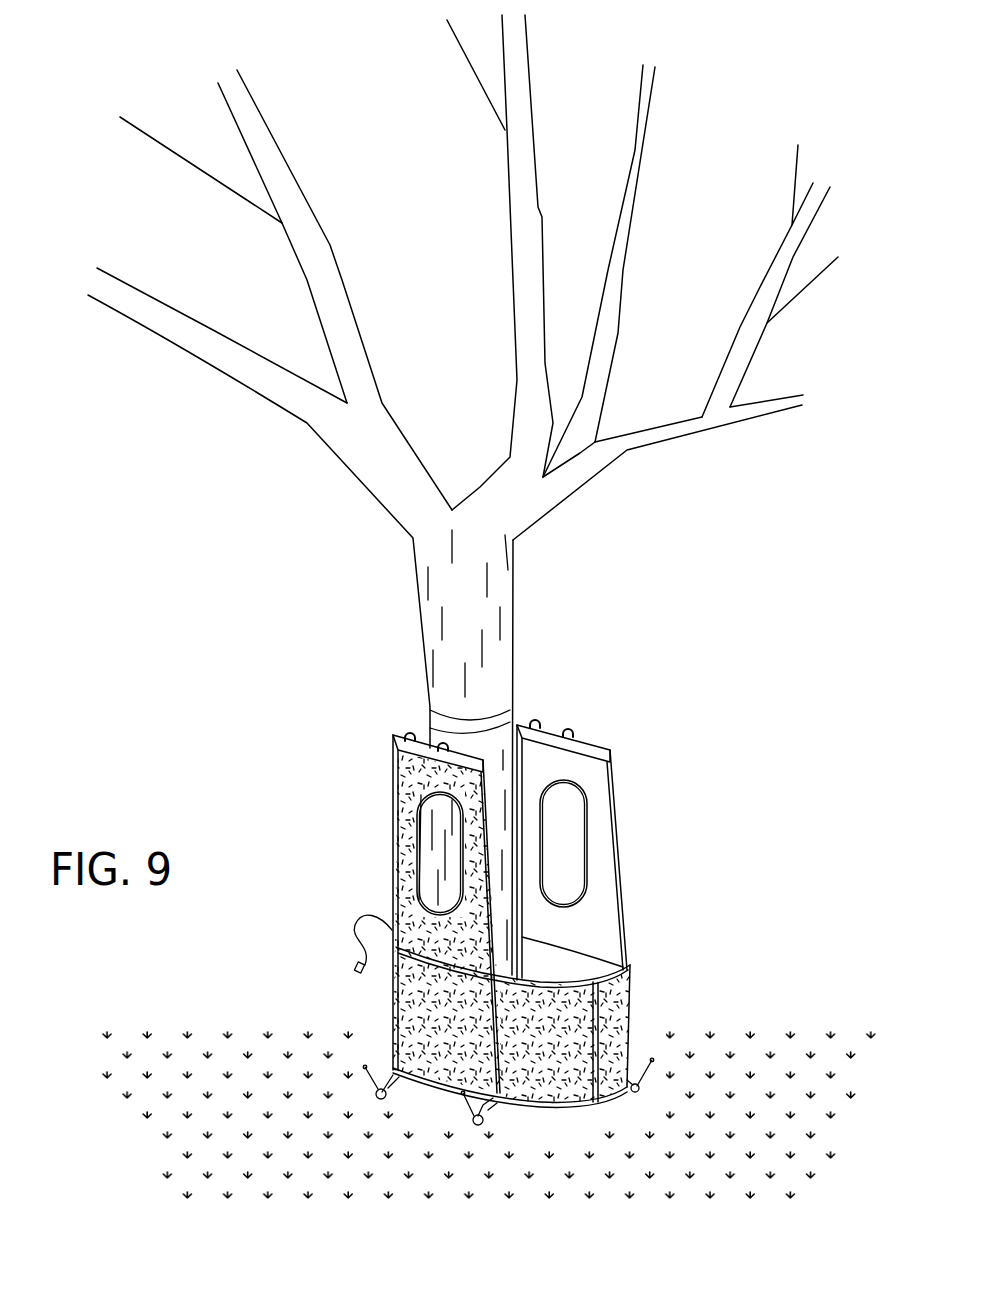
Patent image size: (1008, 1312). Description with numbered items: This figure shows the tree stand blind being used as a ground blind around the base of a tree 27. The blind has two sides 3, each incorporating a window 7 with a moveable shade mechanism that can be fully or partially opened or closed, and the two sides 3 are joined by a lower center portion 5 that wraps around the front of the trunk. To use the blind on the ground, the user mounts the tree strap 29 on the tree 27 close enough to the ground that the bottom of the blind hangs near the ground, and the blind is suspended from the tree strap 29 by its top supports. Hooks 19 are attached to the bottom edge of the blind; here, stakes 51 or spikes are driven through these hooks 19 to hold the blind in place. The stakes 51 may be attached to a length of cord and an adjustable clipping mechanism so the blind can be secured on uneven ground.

The side 3 is at (407, 880).
The lower center portion 5 is at (630, 1007).
The window 7 is at (420, 835).
The hook 19 is at (487, 1117).
The tree 27 is at (500, 583).
The tree strap 29 is at (488, 722).
The stake 51 is at (365, 1067).